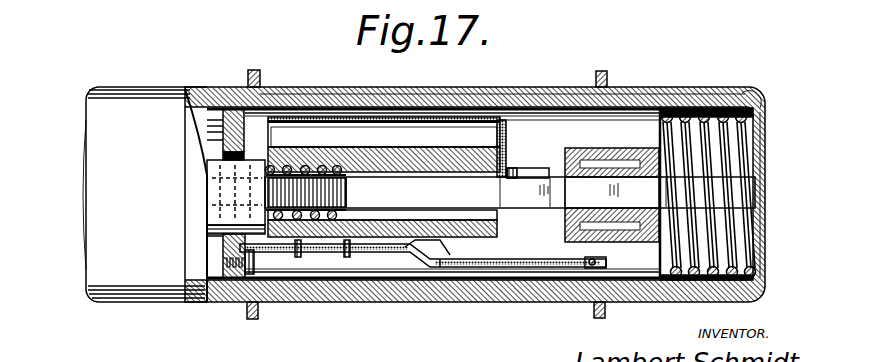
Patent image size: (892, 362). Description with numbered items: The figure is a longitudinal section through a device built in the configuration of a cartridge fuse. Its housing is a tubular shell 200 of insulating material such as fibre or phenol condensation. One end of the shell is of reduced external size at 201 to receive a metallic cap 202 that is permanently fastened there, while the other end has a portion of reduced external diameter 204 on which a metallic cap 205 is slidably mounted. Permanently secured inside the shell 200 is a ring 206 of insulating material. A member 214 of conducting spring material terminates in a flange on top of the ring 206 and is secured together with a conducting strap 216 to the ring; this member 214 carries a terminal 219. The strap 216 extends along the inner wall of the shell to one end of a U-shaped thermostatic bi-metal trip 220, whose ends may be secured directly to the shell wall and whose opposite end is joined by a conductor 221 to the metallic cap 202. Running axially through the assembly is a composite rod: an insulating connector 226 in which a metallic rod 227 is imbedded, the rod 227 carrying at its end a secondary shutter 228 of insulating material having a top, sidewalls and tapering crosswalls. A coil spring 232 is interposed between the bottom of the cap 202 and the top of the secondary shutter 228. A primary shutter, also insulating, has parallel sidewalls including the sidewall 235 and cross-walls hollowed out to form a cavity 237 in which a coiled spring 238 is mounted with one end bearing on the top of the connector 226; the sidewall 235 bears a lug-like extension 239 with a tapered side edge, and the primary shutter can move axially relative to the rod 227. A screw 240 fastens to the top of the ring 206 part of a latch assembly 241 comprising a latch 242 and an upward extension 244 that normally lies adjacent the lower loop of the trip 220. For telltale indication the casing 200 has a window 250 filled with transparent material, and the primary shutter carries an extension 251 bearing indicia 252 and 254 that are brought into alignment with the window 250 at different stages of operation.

The tubular shell 200 is at (497, 302).
The reduced end portion 201 is at (658, 104).
The metallic cap 202 is at (766, 119).
The reduced diameter portion 204 is at (208, 104).
The slidable metallic cap 205 is at (121, 102).
The ring 206 is at (223, 136).
The spring member 214 is at (507, 150).
The conducting strap 216 is at (228, 254).
The terminal 219 is at (526, 172).
The thermostatic bi-metal trip 220 is at (558, 304).
The conductor 221 is at (645, 270).
The insulating connector 226 is at (212, 168).
The metallic rod 227 is at (510, 192).
The secondary shutter 228 is at (617, 147).
The coil spring 232 is at (728, 98).
The primary shutter sidewall 235 is at (492, 232).
The cavity 237 is at (315, 166).
The coiled spring 238 is at (288, 166).
The lug-like extension 239 is at (378, 268).
The screw 240 is at (290, 259).
The latch assembly 241 is at (328, 254).
The latch 242 is at (428, 268).
The upward extension 244 is at (442, 270).
The window 250 is at (467, 93).
The extension 251 is at (340, 120).
The indicia 252 is at (450, 117).
The indicia 254 is at (410, 115).